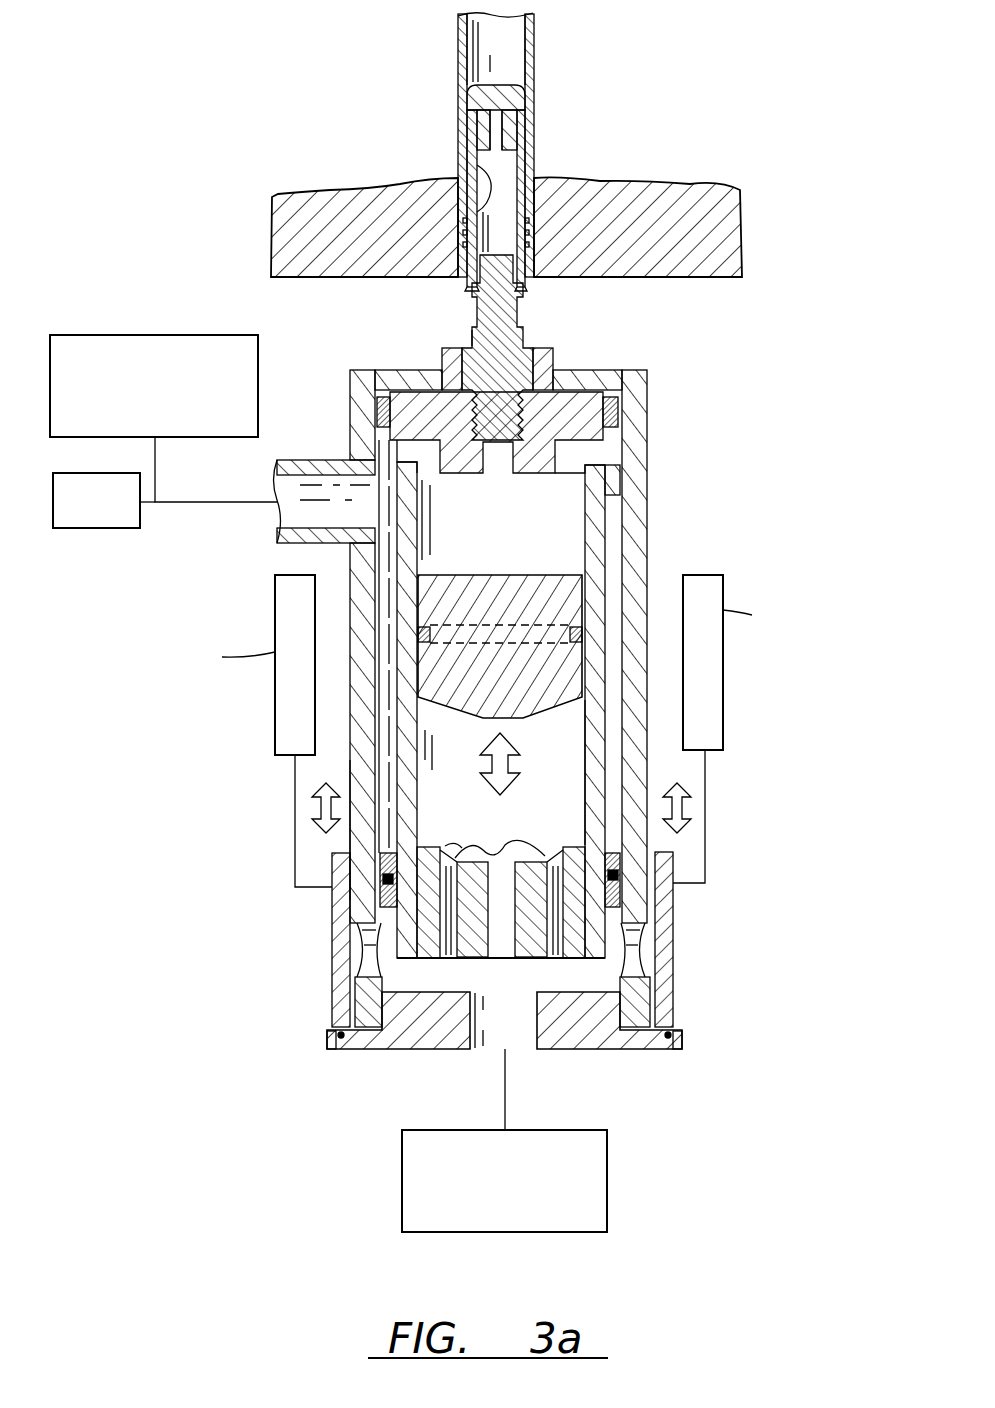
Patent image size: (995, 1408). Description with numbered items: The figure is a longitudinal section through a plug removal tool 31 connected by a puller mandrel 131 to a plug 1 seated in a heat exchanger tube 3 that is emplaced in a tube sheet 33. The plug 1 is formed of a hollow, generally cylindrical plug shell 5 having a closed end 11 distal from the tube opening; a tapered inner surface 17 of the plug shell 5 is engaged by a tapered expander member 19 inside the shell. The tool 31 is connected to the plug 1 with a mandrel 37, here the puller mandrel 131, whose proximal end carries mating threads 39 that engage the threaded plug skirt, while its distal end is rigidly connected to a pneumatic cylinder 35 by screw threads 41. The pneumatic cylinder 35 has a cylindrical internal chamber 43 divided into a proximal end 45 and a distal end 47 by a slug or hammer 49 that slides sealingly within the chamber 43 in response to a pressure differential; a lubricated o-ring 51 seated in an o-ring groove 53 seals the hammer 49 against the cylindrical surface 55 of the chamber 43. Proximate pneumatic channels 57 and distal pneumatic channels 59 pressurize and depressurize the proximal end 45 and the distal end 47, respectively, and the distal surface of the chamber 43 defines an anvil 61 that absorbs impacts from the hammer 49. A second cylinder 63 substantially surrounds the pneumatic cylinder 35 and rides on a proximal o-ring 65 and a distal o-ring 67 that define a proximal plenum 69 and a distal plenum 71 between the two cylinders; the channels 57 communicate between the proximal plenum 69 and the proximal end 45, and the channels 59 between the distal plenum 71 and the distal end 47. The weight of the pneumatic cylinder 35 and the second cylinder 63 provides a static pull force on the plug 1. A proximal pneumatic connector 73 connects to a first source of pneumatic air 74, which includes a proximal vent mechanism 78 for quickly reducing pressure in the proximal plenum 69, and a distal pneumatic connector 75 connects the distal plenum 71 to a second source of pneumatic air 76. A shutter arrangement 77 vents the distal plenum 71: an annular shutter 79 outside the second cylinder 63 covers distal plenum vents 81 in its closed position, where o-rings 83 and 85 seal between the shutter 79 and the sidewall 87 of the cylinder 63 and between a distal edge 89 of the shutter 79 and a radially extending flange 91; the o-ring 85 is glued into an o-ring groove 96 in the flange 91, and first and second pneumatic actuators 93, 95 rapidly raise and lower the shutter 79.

The plug 1 is at (478, 66).
The heat exchanger tube 3 is at (534, 95).
The plug shell 5 is at (518, 140).
The closed end 11 is at (466, 285).
The inner surface 17 is at (484, 183).
The expander member 19 is at (468, 126).
The tool 31 is at (686, 440).
The tube sheet 33 is at (655, 190).
The pneumatic cylinder 35 is at (600, 508).
The mandrel 37 is at (523, 313).
The puller mandrel 131 is at (578, 326).
The mating threads 39 is at (528, 285).
The screw threads 41 is at (554, 350).
The internal chamber 43 is at (560, 550).
The proximal end 45 is at (503, 556).
The distal end 47 is at (429, 776).
The hammer 49 is at (474, 681).
The o-ring 51 is at (566, 634).
The o-ring groove 53 is at (470, 634).
The cylindrical surface 55 is at (586, 785).
The proximate pneumatic channels 57 is at (440, 478).
The distal pneumatic channels 59 is at (485, 855).
The anvil 61 is at (570, 845).
The second cylinder 63 is at (378, 405).
The proximal o-ring 65 is at (620, 412).
The distal o-ring 67 is at (365, 892).
The proximal plenum 69 is at (385, 548).
The distal plenum 71 is at (430, 985).
The proximal pneumatic connector 73 is at (320, 455).
The first source of pneumatic air 74 is at (258, 348).
The distal pneumatic connector 75 is at (520, 1050).
The second source of pneumatic air 76 is at (607, 1180).
The shutter arrangement 77 is at (694, 898).
The proximal vent mechanism 78 is at (110, 528).
The shutter 79 is at (673, 975).
The distal plenum vents 81 is at (370, 930).
The o-ring 83 is at (345, 865).
The o-ring 85 is at (666, 1050).
The sidewall 87 is at (352, 758).
The distal edge 89 is at (342, 1042).
The flange 91 is at (335, 1040).
The first pneumatic actuator 93 is at (275, 714).
The second pneumatic actuator 95 is at (723, 700).
The o-ring groove 96 is at (685, 1040).